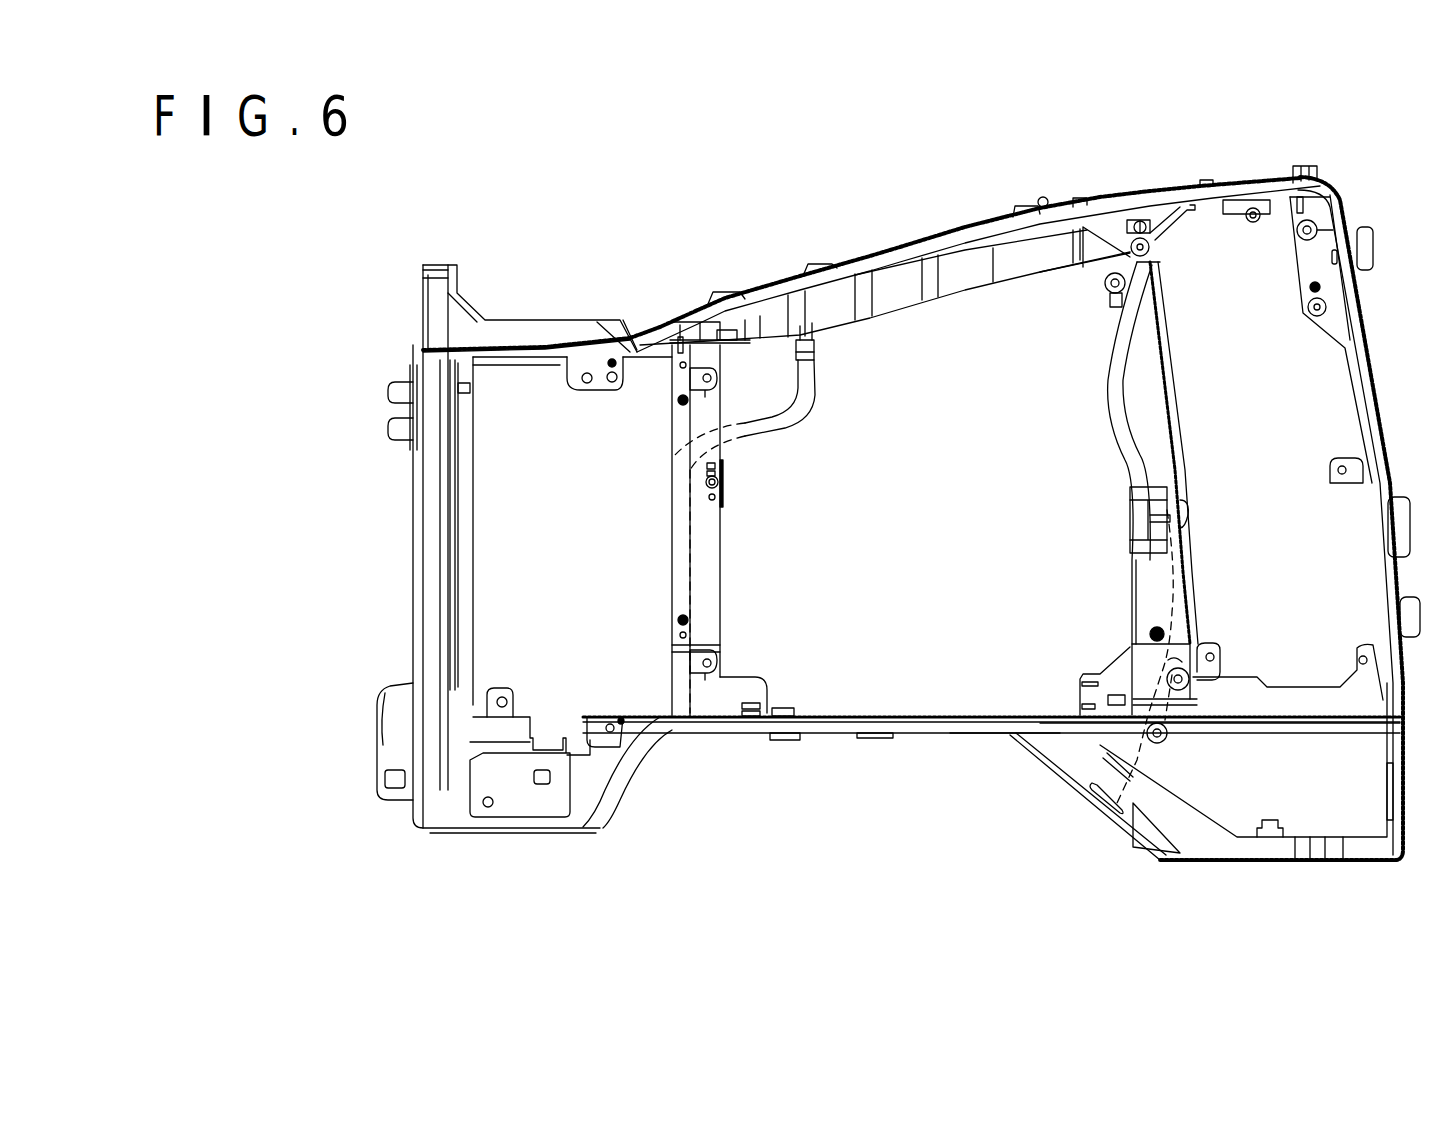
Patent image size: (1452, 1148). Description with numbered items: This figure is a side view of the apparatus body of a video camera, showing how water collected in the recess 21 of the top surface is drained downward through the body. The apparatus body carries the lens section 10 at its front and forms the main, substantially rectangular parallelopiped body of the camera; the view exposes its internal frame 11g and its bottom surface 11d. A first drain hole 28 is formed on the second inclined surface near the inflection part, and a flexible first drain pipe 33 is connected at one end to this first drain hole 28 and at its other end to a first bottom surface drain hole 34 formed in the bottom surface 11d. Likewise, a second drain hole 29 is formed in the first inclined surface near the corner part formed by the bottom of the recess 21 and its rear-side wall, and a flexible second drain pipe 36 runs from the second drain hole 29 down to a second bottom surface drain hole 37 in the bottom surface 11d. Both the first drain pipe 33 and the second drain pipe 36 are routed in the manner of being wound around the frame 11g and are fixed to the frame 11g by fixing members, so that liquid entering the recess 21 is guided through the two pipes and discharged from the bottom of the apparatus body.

The lens section 10 is at (614, 177).
The bottom surface 11d is at (842, 735).
The frame 11g is at (925, 727).
The recess 21 is at (968, 260).
The first drain hole 28 is at (817, 352).
The second drain hole 29 is at (1103, 275).
The first drain pipe 33 is at (787, 417).
The first bottom surface drain hole 34 is at (683, 733).
The second drain pipe 36 is at (1120, 427).
The second bottom surface drain hole 37 is at (1103, 803).